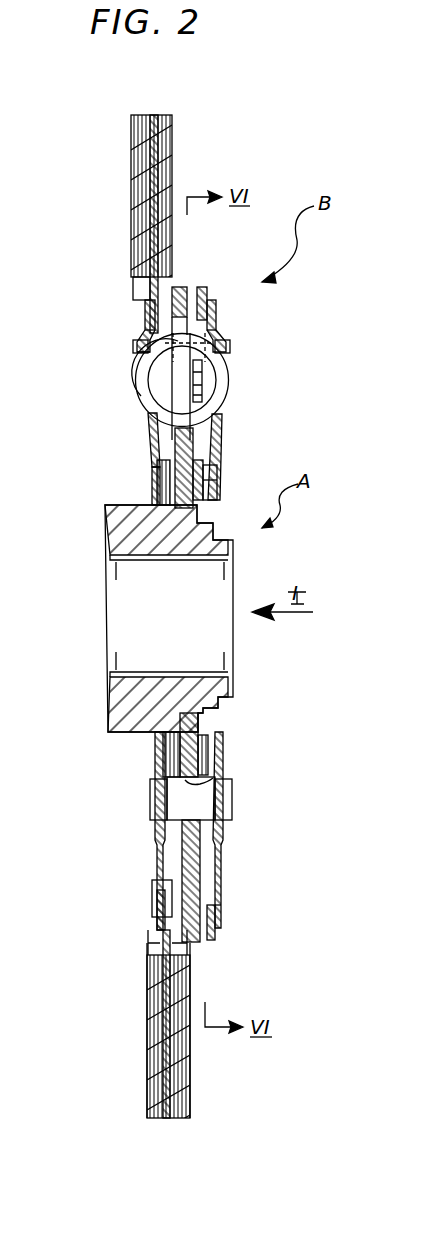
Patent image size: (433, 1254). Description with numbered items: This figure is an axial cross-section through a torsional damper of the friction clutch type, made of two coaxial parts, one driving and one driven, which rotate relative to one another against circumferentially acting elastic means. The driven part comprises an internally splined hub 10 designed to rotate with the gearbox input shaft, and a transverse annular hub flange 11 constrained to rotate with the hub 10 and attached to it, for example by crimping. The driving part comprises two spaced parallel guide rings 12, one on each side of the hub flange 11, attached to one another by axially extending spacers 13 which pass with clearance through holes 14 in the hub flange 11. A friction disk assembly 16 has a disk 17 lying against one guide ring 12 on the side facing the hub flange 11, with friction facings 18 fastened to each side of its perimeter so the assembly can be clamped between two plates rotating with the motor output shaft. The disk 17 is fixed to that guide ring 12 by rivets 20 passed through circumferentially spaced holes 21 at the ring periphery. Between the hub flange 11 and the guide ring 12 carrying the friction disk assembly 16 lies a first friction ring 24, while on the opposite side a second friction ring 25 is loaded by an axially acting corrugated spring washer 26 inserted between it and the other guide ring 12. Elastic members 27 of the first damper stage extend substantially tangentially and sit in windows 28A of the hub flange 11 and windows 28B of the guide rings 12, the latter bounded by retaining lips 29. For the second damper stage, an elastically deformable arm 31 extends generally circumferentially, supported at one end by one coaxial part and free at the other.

The hub 10 is at (88, 520).
The hub flange 11 is at (178, 287).
The guide rings 12 is at (145, 312).
The spacers 13 is at (202, 810).
The holes 14 is at (212, 778).
The friction disk assembly 16 is at (118, 162).
The disk 17 is at (133, 282).
The friction facings 18 is at (157, 115).
The rivets 20 is at (156, 882).
The holes 21 is at (156, 906).
The first friction ring 24 is at (158, 480).
The second friction ring 25 is at (200, 470).
The corrugated spring washer 26 is at (212, 485).
The elastic members 27 is at (224, 370).
The windows 28A is at (150, 364).
The windows 28B is at (137, 344).
The retaining lips 29 is at (135, 344).
The elastically deformable arm 31 is at (202, 287).